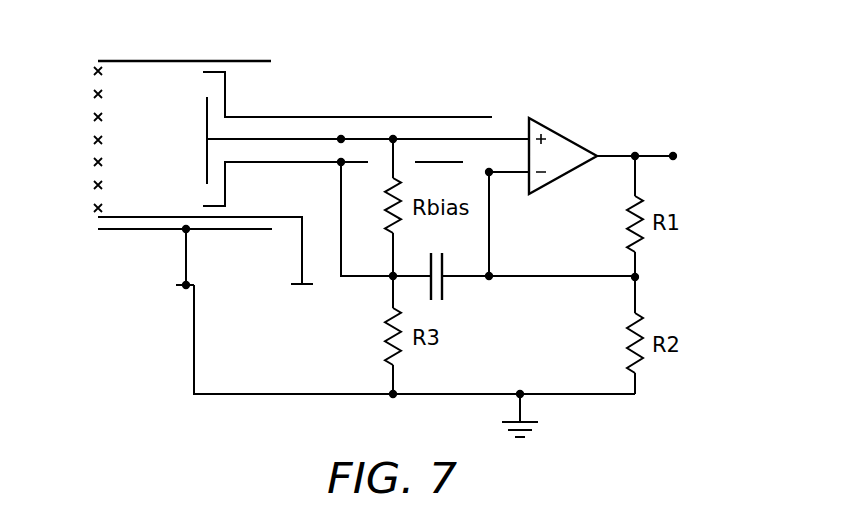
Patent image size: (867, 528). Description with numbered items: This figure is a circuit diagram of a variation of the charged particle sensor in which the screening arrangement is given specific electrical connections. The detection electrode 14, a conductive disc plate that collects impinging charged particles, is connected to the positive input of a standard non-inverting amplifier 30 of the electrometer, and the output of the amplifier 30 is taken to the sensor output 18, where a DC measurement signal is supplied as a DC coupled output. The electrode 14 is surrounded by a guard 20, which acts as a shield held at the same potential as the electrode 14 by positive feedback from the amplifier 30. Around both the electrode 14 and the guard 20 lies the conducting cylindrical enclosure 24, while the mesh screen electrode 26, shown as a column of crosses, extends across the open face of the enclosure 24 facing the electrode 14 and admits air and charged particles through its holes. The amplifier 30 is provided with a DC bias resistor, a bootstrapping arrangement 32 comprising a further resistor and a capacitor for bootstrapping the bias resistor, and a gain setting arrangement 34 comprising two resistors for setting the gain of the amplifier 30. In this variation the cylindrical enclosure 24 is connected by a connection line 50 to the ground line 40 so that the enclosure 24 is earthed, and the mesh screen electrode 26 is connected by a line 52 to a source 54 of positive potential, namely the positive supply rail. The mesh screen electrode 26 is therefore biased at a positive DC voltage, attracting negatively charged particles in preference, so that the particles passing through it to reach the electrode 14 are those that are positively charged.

The cylindrical enclosure 24 is at (137, 60).
The mesh screen electrode 26 is at (93, 141).
The detection electrode 14 is at (206, 108).
The guard 20 is at (426, 116).
The non-inverting amplifier 30 is at (560, 130).
The sensor output 18 is at (673, 157).
The connection line 50 is at (186, 258).
The line 52 is at (302, 258).
The source of positive potential 54 is at (302, 313).
The ground line 40 is at (224, 396).
The bootstrapping arrangement 32 is at (442, 312).
The gain setting arrangement 34 is at (664, 288).